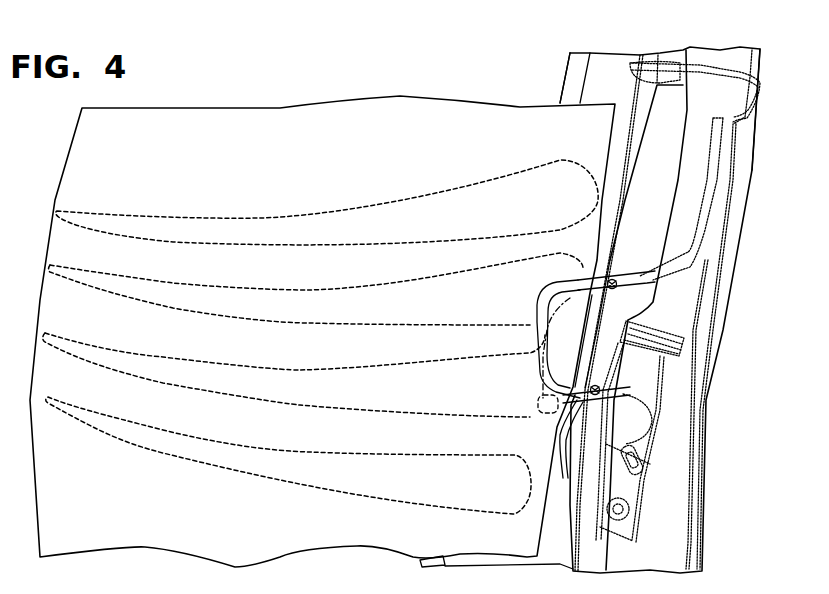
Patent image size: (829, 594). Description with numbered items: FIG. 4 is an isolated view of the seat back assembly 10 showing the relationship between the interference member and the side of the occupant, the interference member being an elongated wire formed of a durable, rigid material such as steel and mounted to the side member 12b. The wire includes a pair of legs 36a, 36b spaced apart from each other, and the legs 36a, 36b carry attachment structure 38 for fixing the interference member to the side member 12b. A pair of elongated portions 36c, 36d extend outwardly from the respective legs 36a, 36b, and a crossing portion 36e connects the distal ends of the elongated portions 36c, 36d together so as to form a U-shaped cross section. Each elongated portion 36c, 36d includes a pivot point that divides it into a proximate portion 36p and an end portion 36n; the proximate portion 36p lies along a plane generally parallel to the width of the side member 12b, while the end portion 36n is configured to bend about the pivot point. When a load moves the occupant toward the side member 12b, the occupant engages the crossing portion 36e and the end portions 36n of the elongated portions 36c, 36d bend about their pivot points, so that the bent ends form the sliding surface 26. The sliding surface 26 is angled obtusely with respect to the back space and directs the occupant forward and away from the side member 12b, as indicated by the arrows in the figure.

The vehicle body 10 is at (589, 43).
The side member 12b is at (764, 66).
The sliding surface 26 is at (521, 404).
The leg 36a is at (716, 230).
The leg 36b is at (650, 414).
The elongated portion 36c is at (589, 259).
The elongated portion 36d is at (595, 398).
The crossing portion 36e is at (533, 342).
The end portion 36n is at (560, 278).
The proximate portion 36p is at (626, 279).
The attachment structure 38 is at (655, 472).